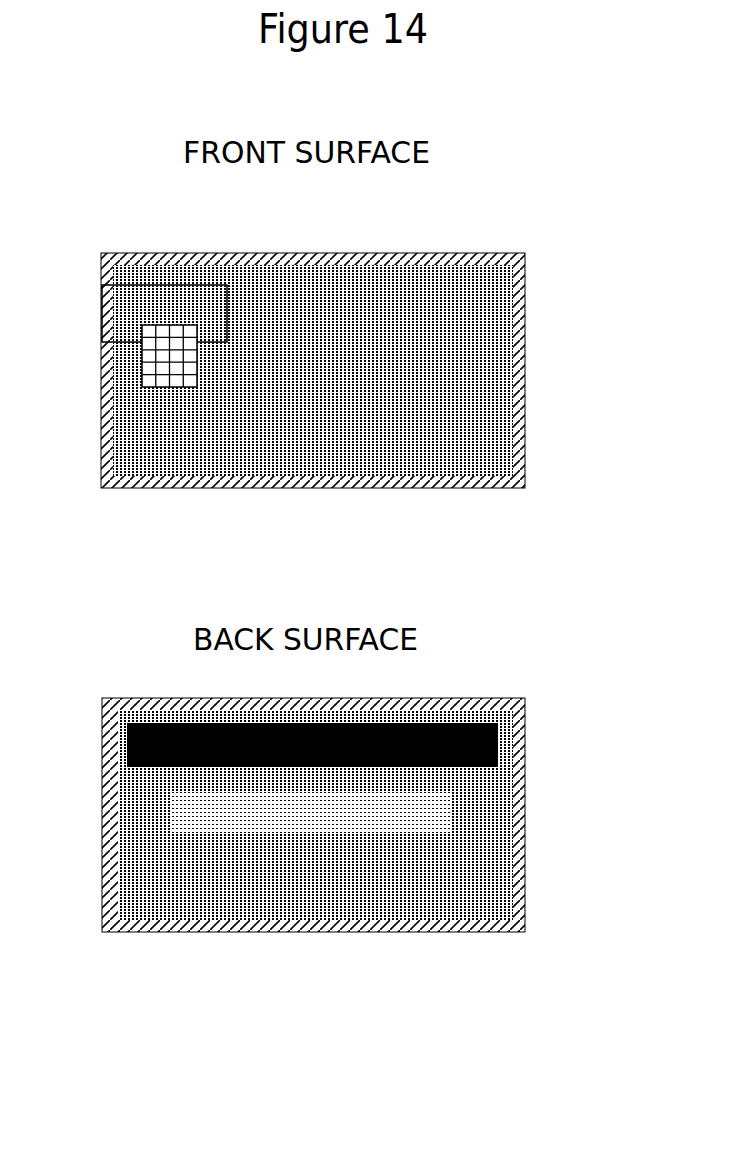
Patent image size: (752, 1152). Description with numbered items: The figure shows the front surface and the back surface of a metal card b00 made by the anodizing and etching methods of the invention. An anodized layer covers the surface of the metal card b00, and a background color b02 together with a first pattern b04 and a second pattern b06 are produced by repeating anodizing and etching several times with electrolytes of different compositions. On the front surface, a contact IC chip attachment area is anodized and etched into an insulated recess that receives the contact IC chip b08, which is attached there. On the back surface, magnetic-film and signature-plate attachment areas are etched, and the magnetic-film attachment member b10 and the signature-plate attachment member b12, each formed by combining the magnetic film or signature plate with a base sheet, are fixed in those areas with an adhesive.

The metal card b00 is at (523, 290).
The background color b02 is at (490, 442).
The first pattern b04 is at (515, 365).
The second pattern b06 is at (198, 284).
The contact IC chip b08 is at (152, 365).
The magnetic-film attachment member b10 is at (500, 738).
The signature-plate attachment member b12 is at (238, 827).